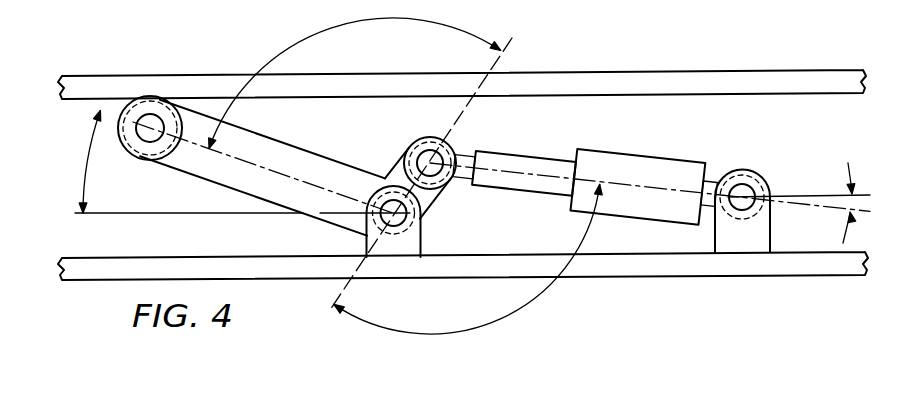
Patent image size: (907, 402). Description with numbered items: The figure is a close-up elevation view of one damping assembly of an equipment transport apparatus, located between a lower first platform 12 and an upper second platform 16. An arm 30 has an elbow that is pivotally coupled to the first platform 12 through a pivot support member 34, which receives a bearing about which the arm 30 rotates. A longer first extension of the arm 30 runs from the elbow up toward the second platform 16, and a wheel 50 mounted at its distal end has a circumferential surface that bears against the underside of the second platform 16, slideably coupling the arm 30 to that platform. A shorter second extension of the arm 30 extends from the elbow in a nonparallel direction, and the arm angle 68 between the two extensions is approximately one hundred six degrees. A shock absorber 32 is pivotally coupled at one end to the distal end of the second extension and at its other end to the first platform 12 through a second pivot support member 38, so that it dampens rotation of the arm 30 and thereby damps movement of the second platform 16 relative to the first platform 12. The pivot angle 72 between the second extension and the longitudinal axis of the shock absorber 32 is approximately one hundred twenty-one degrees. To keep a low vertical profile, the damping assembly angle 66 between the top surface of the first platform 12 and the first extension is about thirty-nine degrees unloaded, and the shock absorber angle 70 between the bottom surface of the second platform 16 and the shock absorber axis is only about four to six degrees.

The wheel 50 is at (120, 98).
The arm angle 68 is at (288, 50).
The second platform 16 is at (734, 70).
The arm 30 is at (316, 156).
The shock absorber 32 is at (643, 153).
The damping assembly angle 66 is at (85, 168).
The pivot support member 34 is at (421, 245).
The first platform 12 is at (612, 278).
The pivot support member 38 is at (715, 242).
The pivot angle 72 is at (517, 309).
The shock absorber angle 70 is at (860, 195).